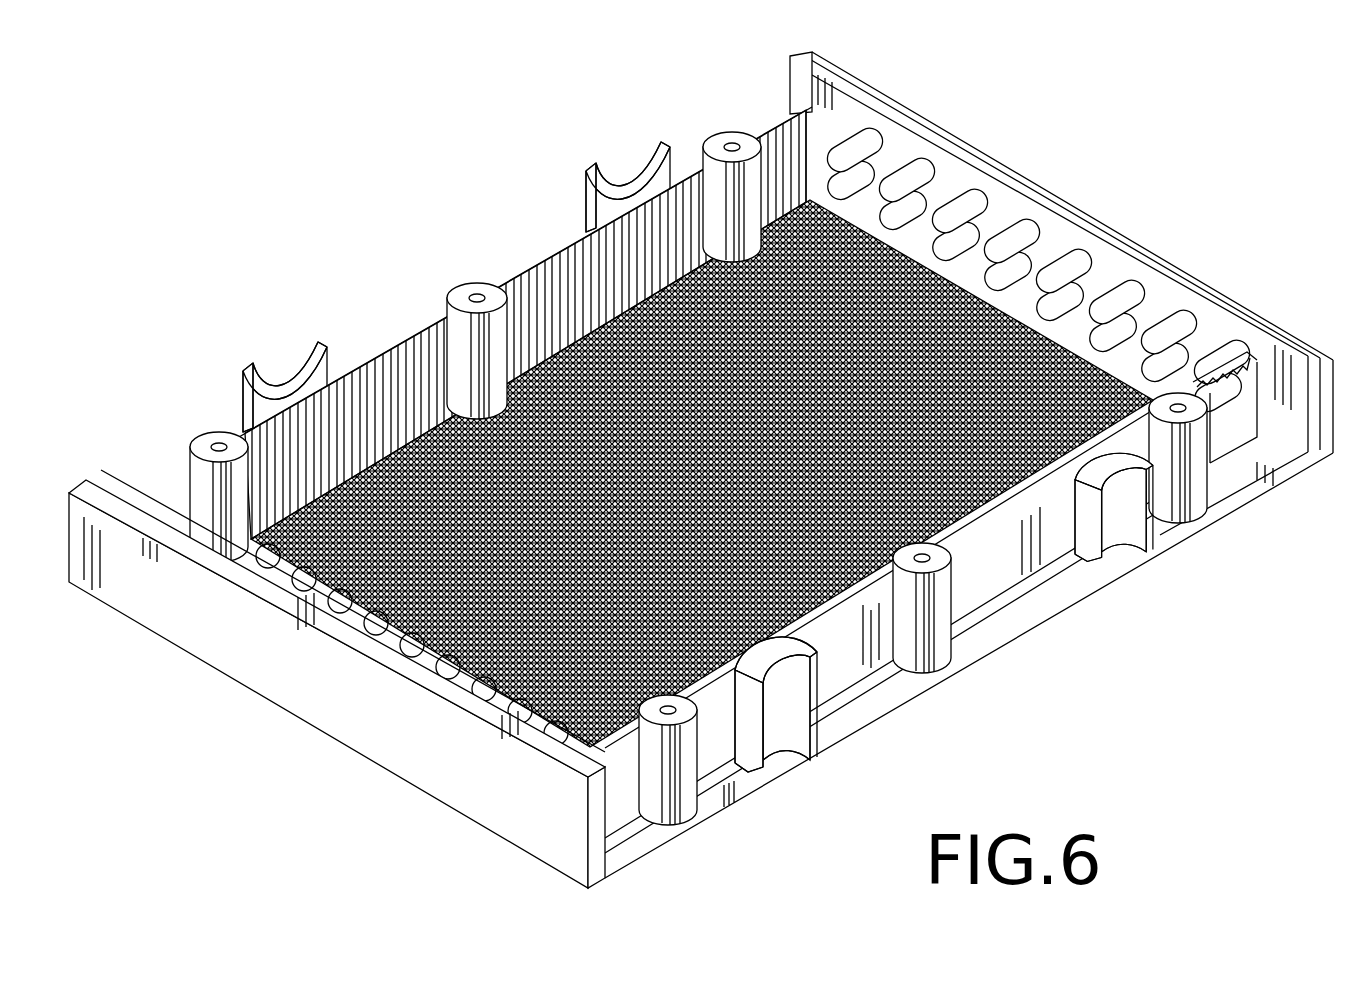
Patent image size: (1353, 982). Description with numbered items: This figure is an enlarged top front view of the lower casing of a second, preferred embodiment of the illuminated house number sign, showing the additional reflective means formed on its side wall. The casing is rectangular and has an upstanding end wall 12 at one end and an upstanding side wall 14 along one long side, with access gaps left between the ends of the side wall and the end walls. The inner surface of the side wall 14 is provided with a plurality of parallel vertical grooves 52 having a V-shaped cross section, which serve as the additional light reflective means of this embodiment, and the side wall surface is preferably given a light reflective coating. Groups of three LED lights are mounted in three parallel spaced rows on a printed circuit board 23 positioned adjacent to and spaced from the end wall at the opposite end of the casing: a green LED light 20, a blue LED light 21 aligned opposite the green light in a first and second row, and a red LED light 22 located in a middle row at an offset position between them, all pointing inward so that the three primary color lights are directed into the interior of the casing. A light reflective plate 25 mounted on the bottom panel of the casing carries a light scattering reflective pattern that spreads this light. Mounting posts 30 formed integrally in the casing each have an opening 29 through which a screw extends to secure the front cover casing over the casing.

The end wall 12 is at (214, 650).
The side wall 14 is at (392, 347).
The LED light 20 is at (860, 150).
The LED light 21 is at (900, 173).
The LED light 22 is at (943, 145).
The printed circuit board 23 is at (795, 80).
The light reflective plate 25 is at (997, 303).
The opening 29 is at (470, 293).
The mounting post 30 is at (494, 327).
The vertical groove 52 is at (568, 255).